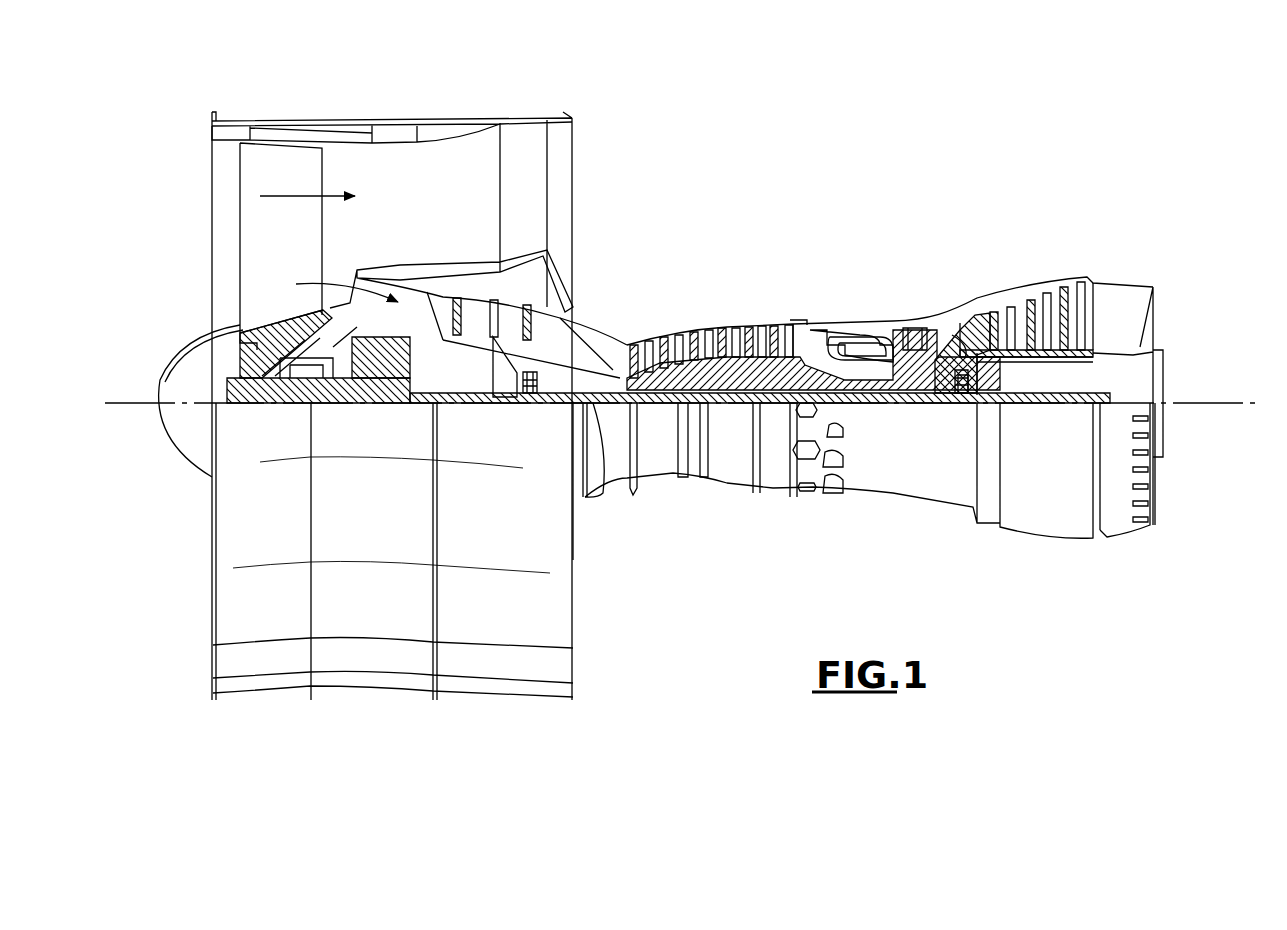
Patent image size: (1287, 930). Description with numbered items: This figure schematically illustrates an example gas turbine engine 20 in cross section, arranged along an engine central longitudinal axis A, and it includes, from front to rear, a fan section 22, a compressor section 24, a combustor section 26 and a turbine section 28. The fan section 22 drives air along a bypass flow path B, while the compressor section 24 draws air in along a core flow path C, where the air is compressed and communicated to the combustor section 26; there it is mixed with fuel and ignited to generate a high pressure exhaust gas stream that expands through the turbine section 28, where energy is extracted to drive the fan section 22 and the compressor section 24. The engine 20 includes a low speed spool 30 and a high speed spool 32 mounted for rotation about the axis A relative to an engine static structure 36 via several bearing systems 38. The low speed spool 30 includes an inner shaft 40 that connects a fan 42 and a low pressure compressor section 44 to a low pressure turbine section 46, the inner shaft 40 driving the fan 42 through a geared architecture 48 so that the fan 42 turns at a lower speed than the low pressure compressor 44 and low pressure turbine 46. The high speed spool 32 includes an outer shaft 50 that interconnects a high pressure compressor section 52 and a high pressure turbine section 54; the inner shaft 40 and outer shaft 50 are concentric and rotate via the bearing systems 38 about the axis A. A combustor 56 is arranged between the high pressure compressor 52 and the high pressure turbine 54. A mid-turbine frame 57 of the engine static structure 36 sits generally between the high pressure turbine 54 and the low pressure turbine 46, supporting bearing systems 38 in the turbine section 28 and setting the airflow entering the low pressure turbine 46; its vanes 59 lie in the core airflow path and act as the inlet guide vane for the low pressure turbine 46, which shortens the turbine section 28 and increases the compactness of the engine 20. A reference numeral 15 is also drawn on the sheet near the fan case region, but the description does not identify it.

The fan case 15 is at (390, 120).
The gas turbine engine 20 is at (855, 168).
The fan section 22 is at (322, 112).
The compressor section 24 is at (625, 312).
The combustor section 26 is at (845, 300).
The turbine section 28 is at (995, 265).
The low speed spool 30 is at (732, 410).
The high speed spool 32 is at (775, 350).
The engine static structure 36 is at (775, 492).
The bearing systems 38 is at (530, 380).
The inner shaft 40 is at (597, 405).
The fan 42 is at (294, 248).
The low pressure compressor section 44 is at (430, 322).
The low pressure turbine section 46 is at (1040, 280).
The geared architecture 48 is at (395, 385).
The outer shaft 50 is at (860, 400).
The high pressure compressor section 52 is at (700, 385).
The high pressure turbine section 54 is at (905, 350).
The combustor 56 is at (850, 348).
The mid-turbine frame 57 is at (948, 310).
The vanes 59 is at (975, 358).
The engine central longitudinal axis A is at (1246, 403).
The bypass flow path B is at (298, 196).
The core flow path C is at (335, 287).